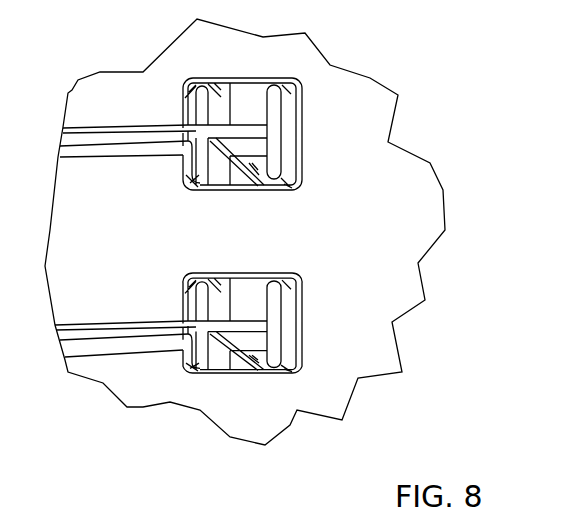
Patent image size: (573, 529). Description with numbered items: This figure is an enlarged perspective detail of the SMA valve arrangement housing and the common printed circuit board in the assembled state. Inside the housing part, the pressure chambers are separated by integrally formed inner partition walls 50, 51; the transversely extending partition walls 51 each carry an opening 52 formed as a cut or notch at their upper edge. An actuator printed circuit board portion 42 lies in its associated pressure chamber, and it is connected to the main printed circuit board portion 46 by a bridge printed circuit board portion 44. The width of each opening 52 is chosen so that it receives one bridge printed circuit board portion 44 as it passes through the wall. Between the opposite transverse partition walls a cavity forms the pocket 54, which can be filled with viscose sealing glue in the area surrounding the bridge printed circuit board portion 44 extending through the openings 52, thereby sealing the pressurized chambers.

The actuator printed circuit board portion 42 is at (134, 281).
The bridge printed circuit board portion 44 is at (257, 244).
The main printed circuit board portion 46 is at (371, 244).
The partition wall 50 is at (127, 139).
The transversely extending partition wall 51 is at (220, 112).
The opening 52 is at (213, 373).
The pocket 54 is at (249, 176).